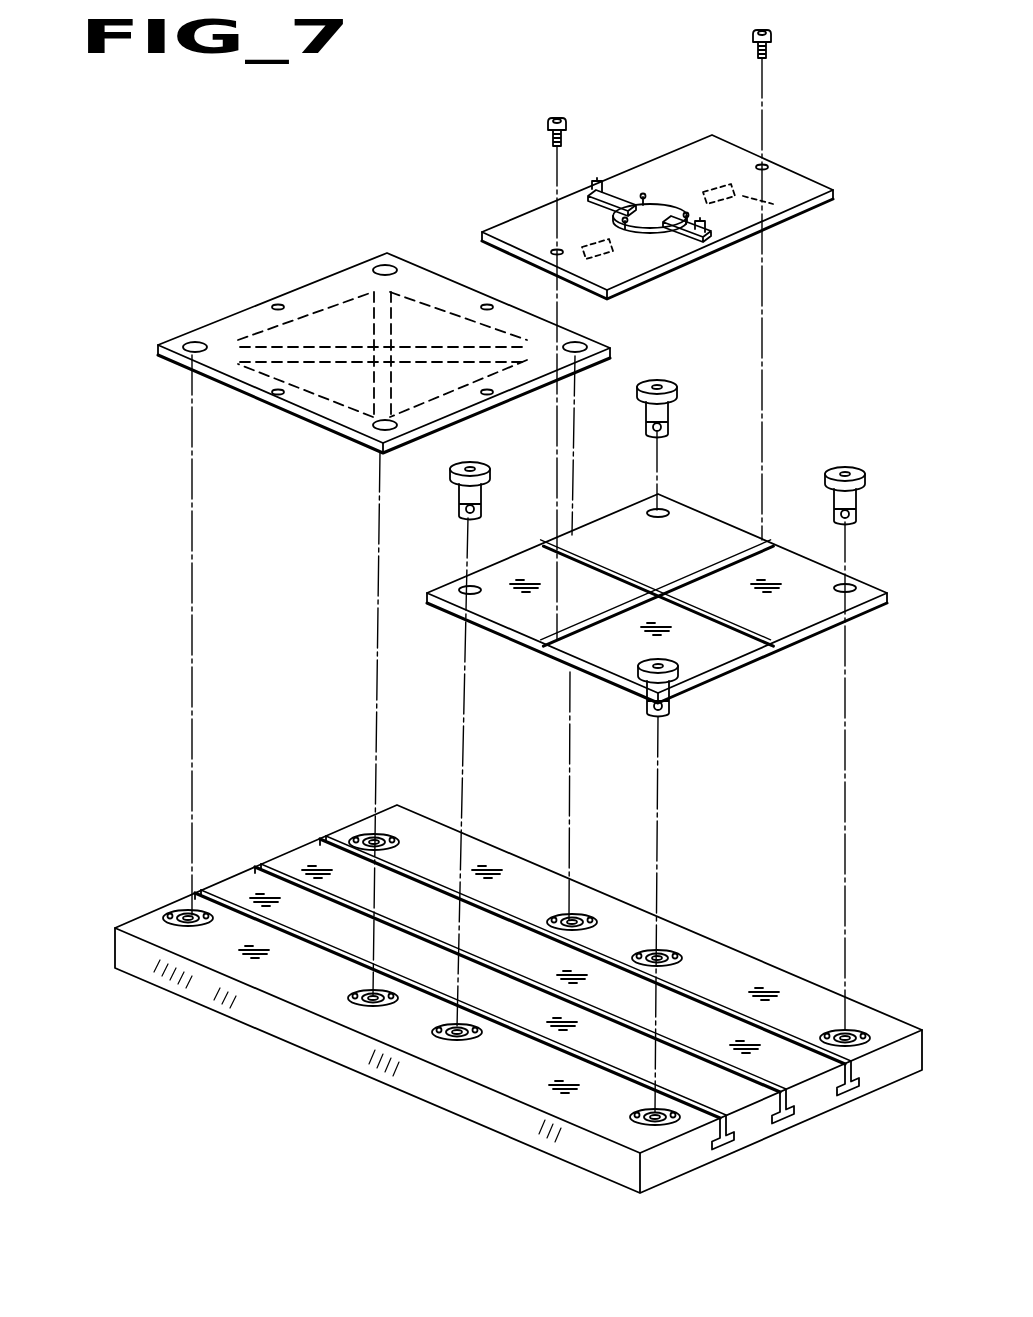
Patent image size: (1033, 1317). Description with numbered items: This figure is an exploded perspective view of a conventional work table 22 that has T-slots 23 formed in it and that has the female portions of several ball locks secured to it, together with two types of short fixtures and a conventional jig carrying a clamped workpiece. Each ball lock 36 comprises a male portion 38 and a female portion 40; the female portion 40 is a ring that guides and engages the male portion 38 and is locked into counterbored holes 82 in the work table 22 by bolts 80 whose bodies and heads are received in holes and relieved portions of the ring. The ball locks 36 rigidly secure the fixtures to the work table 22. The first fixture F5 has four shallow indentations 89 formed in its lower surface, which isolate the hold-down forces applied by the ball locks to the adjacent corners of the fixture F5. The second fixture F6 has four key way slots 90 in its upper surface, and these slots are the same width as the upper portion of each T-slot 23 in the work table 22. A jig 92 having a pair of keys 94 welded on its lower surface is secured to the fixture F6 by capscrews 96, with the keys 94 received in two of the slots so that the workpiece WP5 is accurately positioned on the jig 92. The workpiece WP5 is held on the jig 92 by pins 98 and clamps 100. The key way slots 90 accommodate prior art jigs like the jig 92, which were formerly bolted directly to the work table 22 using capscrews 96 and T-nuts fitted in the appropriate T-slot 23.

The work table 22 is at (182, 989).
The T-slots 23 is at (715, 1146).
The ball locks 36 is at (489, 468).
The male portion 38 is at (481, 497).
The female portion 40 is at (186, 914).
The bolts 80 is at (391, 846).
The counterbored holes 82 is at (360, 833).
The shallow indentations 89 is at (428, 296).
The key way slots 90 is at (710, 572).
The jig 92 is at (780, 166).
The keys 94 is at (783, 207).
The capscrews 96 is at (758, 50).
The pins 98 is at (688, 216).
The clamps 100 is at (607, 187).
The fixture F5 is at (293, 294).
The fixture F6 is at (557, 660).
The workpiece WP5 is at (614, 219).